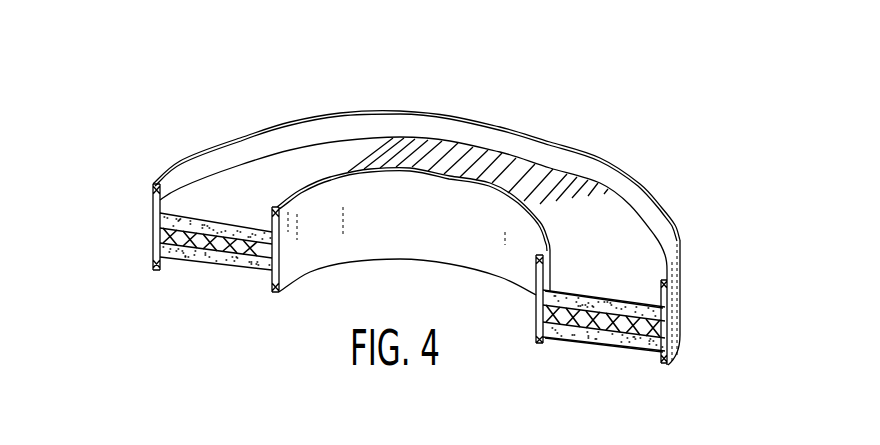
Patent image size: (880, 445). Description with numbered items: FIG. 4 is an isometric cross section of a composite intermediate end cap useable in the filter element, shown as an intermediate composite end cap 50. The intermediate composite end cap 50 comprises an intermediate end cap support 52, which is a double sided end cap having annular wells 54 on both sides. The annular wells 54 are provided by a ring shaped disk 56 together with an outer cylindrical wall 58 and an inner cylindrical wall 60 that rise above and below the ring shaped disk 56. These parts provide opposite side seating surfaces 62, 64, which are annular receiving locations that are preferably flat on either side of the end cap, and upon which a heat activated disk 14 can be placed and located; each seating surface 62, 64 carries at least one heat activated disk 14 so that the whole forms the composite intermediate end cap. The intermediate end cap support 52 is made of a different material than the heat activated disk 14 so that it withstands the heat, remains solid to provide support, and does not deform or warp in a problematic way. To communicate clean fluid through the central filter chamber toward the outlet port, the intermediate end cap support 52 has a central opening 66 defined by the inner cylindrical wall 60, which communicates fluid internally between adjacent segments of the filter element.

The intermediate composite end cap 50 is at (126, 141).
The heat activated disk 14 is at (225, 228).
The annular well 54 is at (308, 156).
The central opening 66 is at (440, 201).
The intermediate end cap support 52 is at (153, 232).
The seating surface 62 is at (622, 304).
The outer cylindrical wall 58 is at (670, 309).
The inner cylindrical wall 60 is at (541, 344).
The ring shaped disk 56 is at (581, 344).
The seating surface 64 is at (642, 353).